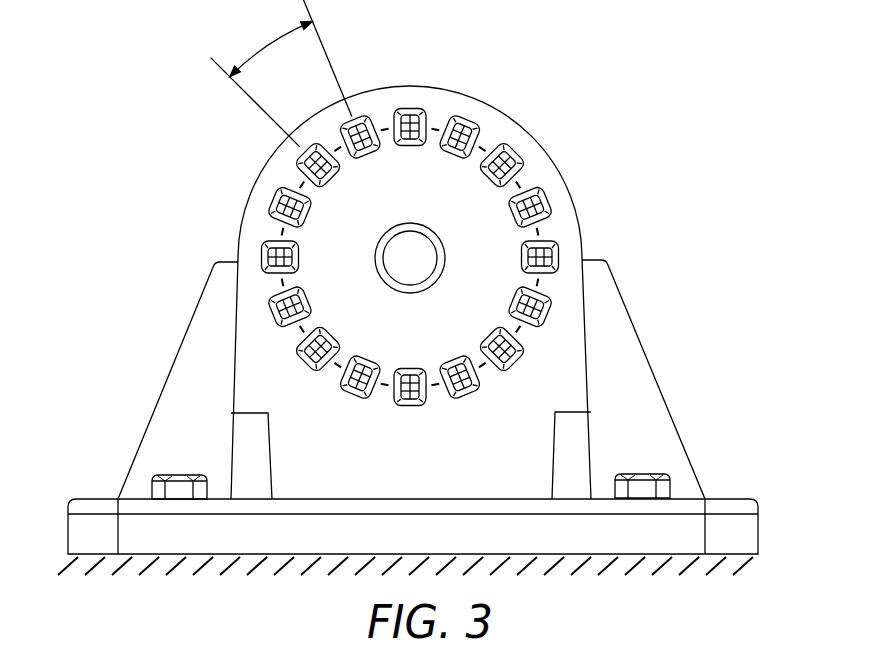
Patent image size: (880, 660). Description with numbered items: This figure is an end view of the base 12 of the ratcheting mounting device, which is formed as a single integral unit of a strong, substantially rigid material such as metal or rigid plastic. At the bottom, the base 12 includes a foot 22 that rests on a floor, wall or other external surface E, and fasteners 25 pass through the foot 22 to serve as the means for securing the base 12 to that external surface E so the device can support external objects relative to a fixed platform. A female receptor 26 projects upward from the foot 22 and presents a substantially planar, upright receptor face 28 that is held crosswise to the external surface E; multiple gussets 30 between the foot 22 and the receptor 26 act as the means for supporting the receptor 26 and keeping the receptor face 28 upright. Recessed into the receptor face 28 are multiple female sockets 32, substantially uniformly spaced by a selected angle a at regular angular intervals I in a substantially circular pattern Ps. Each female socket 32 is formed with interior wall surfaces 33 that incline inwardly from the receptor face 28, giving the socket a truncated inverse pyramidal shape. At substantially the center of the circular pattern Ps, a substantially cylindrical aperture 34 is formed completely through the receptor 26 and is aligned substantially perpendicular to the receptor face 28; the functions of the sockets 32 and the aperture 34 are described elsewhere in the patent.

The base 12 is at (681, 263).
The foot 22 is at (716, 498).
The fasteners 25 is at (178, 473).
The female receptor 26 is at (583, 221).
The receptor face 28 is at (410, 257).
The gussets 30 is at (573, 412).
The female sockets 32 is at (431, 117).
The interior wall surfaces 33 is at (512, 173).
The cylindrical aperture 34 is at (419, 249).
The selected angle a is at (281, 73).
The regular angular intervals I is at (328, 138).
The circular pattern Ps is at (303, 190).
The external surface E is at (405, 582).